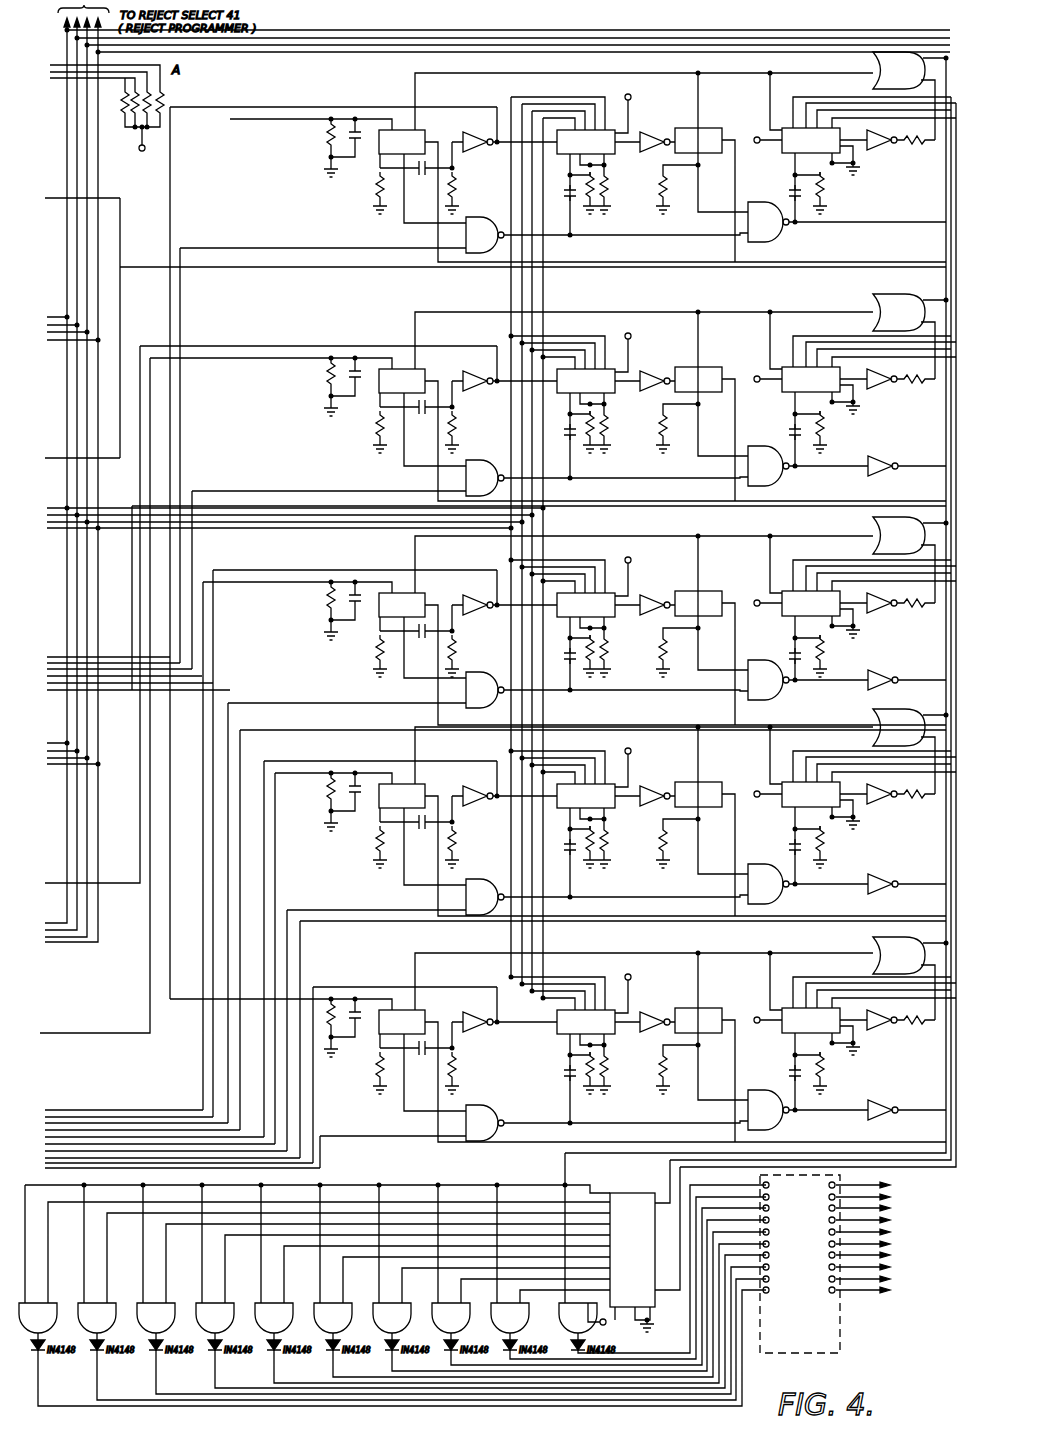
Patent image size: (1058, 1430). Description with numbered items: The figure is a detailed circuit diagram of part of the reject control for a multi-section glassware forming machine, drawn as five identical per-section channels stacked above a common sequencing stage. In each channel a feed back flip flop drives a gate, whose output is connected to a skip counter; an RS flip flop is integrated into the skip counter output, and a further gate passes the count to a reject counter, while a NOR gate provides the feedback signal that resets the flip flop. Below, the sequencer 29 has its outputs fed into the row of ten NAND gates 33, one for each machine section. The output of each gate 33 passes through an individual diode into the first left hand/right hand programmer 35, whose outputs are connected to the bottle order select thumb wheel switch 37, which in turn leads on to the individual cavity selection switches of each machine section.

The sequencer 29 is at (655, 1258).
The gates 33 is at (315, 1258).
The first left hand/right hand programmer 35 is at (807, 1243).
The bottle order select thumb wheel switch 37 is at (891, 1243).